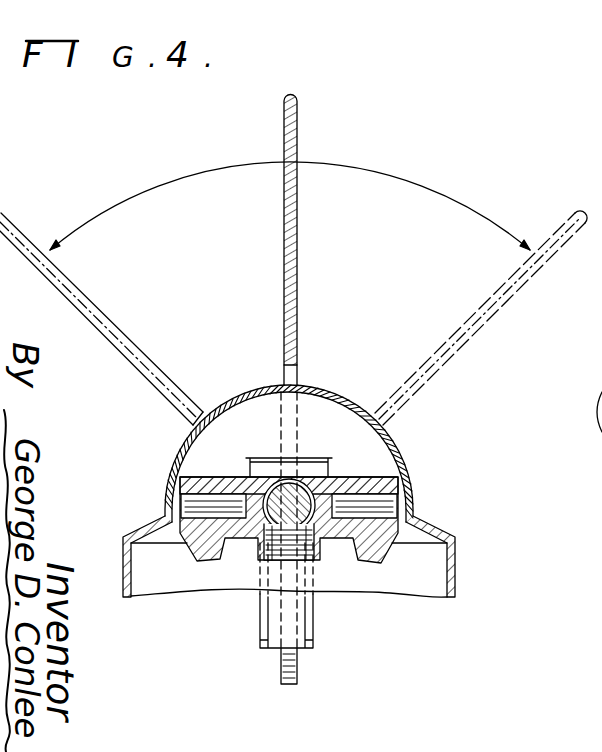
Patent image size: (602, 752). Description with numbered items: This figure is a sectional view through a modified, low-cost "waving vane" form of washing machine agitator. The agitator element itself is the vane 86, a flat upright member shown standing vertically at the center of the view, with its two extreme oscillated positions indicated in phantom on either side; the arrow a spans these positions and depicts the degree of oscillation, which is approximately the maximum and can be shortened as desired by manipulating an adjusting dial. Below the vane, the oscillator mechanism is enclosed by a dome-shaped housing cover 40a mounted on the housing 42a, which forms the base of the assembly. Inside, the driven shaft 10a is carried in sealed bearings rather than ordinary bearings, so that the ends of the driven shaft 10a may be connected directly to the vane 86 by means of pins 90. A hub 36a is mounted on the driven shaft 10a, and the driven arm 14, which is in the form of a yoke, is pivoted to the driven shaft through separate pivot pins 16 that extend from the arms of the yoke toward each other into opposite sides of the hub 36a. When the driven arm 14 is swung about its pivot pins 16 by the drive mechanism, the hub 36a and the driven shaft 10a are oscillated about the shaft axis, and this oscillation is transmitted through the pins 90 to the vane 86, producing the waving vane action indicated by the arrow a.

The arrow a is at (357, 168).
The vane 86 is at (298, 229).
The housing cover 40a is at (312, 384).
The housing 42a is at (454, 576).
The hub 36a is at (235, 477).
The driven shaft 10a is at (312, 477).
The pivot pins 16 is at (383, 503).
The driven arm 14 is at (377, 550).
The pins 90 is at (262, 542).